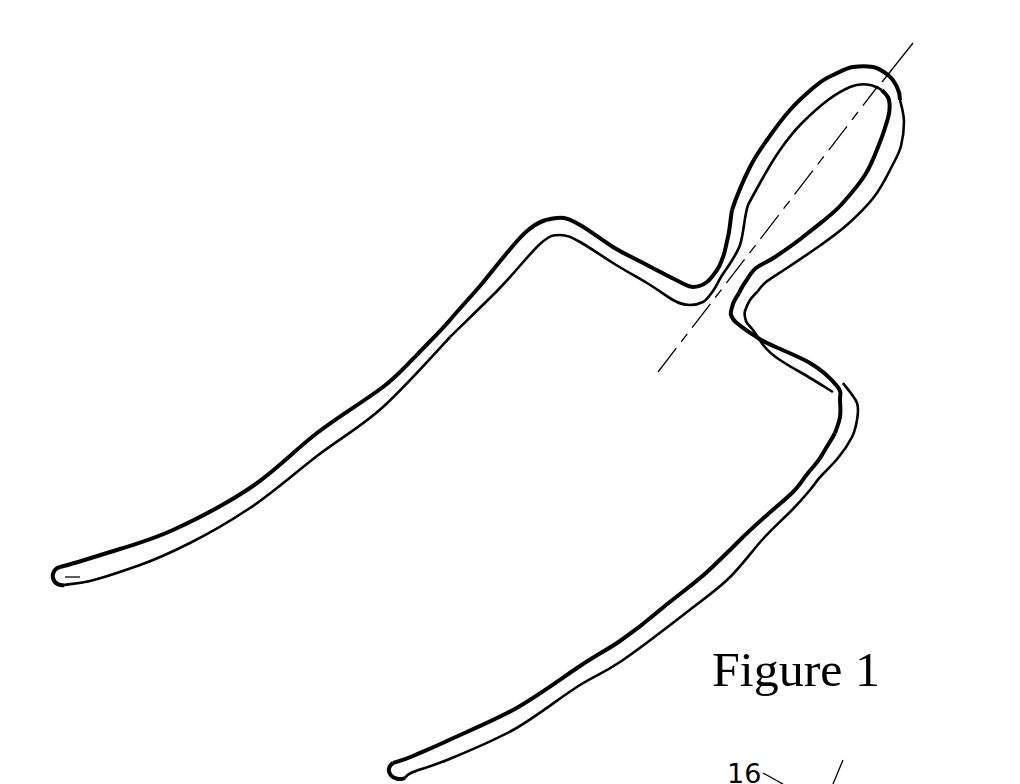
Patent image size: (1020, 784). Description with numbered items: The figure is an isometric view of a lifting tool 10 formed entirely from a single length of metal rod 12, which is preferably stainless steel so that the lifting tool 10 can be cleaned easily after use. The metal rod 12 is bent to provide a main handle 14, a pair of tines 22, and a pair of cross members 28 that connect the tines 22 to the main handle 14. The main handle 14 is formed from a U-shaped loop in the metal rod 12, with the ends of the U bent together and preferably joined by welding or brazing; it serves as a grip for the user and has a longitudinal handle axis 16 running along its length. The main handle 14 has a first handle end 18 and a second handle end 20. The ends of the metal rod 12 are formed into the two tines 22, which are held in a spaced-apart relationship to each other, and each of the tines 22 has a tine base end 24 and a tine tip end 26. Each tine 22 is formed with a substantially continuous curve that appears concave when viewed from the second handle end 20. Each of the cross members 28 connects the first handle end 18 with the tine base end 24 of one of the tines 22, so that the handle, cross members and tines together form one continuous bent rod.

The lifting tool 10 is at (478, 391).
The metal rod 12 is at (415, 349).
The main handle 14 is at (772, 148).
The longitudinal handle axis 16 is at (896, 66).
The first handle end 18 is at (722, 268).
The second handle end 20 is at (868, 78).
The tines 22 is at (459, 557).
The tine base end 24 is at (685, 355).
The tine tip end 26 is at (244, 673).
The cross members 28 is at (686, 319).